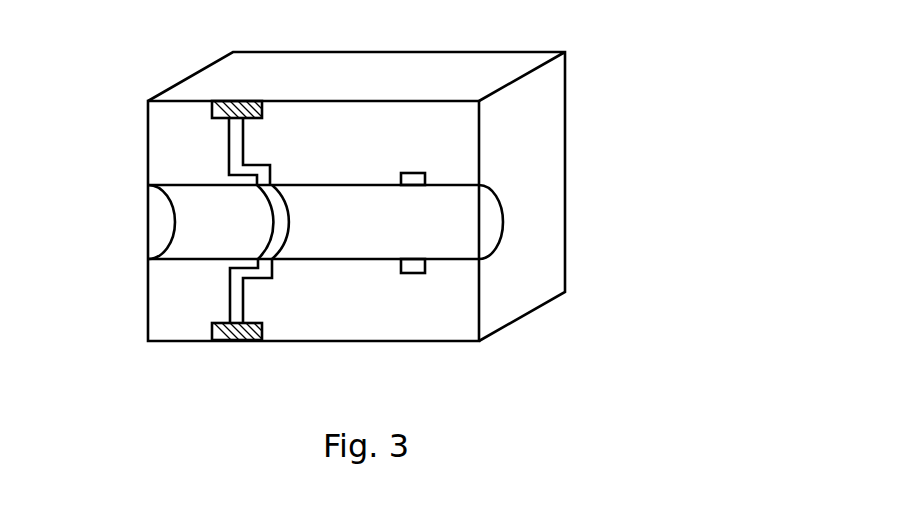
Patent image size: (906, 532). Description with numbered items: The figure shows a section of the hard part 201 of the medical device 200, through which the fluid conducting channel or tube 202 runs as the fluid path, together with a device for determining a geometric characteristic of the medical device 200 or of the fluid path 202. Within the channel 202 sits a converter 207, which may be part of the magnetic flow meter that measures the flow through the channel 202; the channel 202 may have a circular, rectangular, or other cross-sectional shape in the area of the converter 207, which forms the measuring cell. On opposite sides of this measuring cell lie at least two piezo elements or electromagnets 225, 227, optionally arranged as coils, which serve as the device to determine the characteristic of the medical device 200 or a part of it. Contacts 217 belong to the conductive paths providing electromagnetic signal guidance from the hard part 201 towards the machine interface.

The medical device 200 is at (651, 70).
The hard part 201 is at (543, 132).
The fluid conducting channel 202 is at (207, 222).
The converter 207 is at (283, 218).
The contact 217 is at (238, 108).
The piezo element or electromagnet 225 is at (415, 173).
The piezo element or electromagnet 227 is at (412, 273).